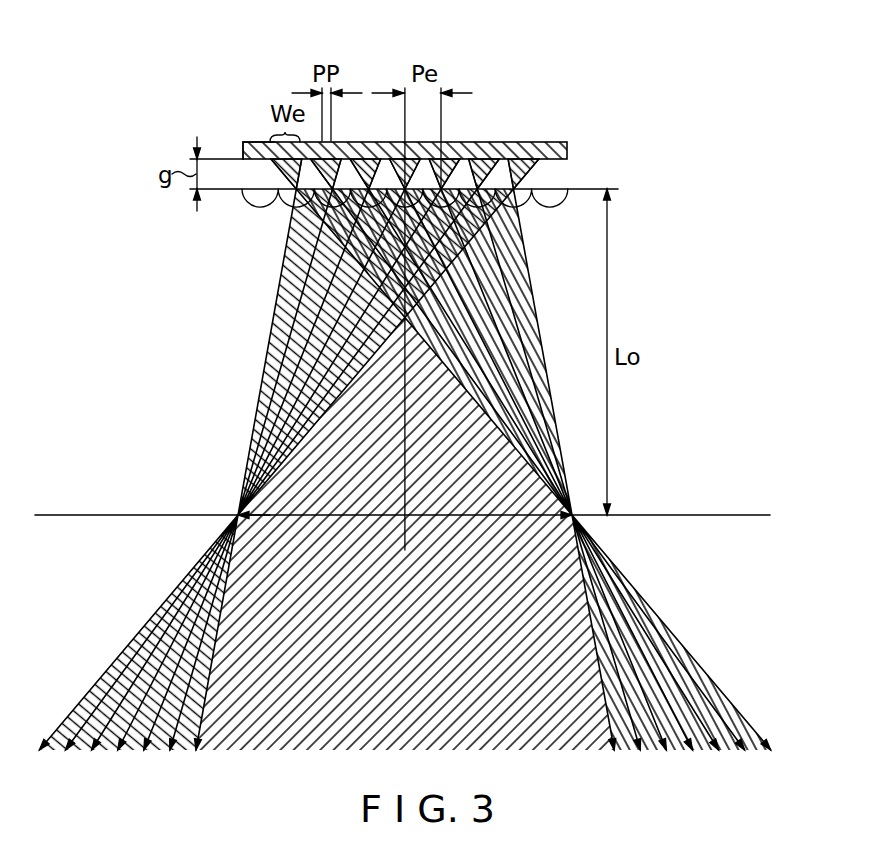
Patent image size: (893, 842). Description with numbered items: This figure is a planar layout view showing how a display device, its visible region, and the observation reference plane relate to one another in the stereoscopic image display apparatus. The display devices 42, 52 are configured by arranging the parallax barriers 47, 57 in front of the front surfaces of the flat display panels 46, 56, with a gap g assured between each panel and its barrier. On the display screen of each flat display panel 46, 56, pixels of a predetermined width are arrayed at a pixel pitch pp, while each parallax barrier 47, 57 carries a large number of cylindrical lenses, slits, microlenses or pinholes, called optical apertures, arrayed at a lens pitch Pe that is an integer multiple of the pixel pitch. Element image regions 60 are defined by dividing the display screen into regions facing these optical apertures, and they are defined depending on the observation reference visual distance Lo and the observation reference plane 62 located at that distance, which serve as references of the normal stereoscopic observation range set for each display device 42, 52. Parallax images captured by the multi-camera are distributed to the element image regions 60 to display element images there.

The display device 42 is at (424, 135).
The display device 52 is at (497, 87).
The flat display panel 46 is at (451, 150).
The flat display panel 56 is at (568, 150).
The parallax barrier 47 is at (404, 220).
The parallax barrier 57 is at (552, 208).
The element image region 60 is at (262, 139).
The observation reference plane 62 is at (303, 513).